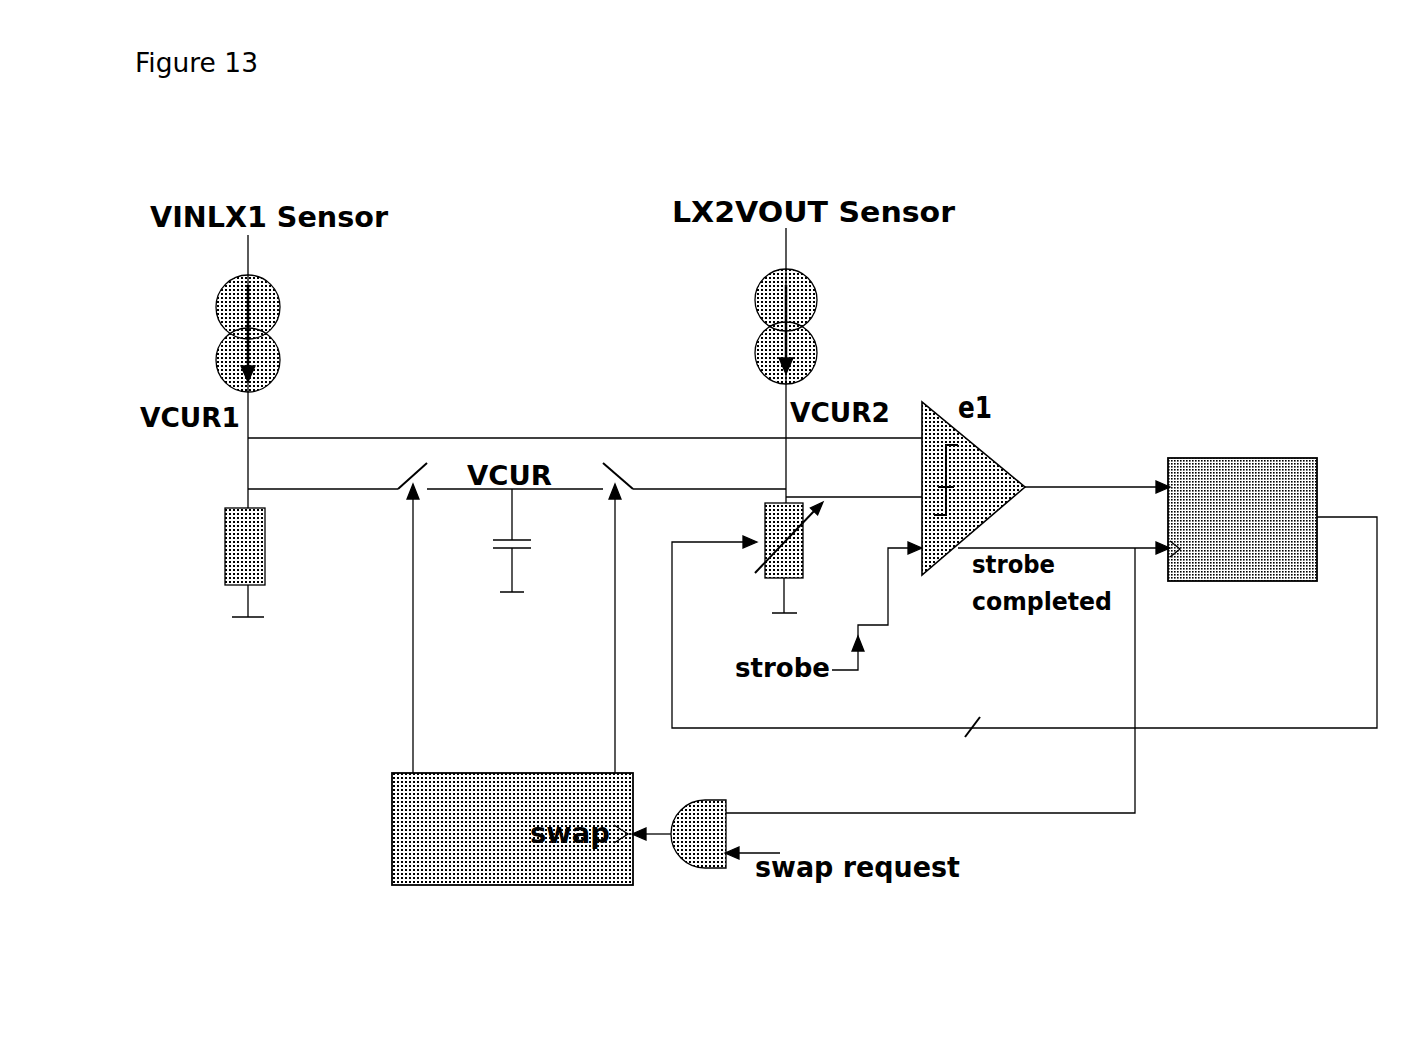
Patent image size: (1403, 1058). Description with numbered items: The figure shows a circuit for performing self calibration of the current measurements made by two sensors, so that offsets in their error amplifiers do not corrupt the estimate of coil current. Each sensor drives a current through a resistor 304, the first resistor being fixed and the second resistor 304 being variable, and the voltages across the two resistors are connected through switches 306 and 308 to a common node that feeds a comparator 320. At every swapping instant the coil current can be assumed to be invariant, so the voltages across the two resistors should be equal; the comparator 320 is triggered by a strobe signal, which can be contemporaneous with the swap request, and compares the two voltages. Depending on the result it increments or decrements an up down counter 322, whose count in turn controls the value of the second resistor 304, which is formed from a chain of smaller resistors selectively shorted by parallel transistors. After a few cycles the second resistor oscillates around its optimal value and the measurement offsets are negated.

The resistor 304 is at (267, 545).
The switch 306 is at (388, 473).
The switch 308 is at (645, 477).
The comparator 320 is at (985, 452).
The up down counter 322 is at (1243, 458).